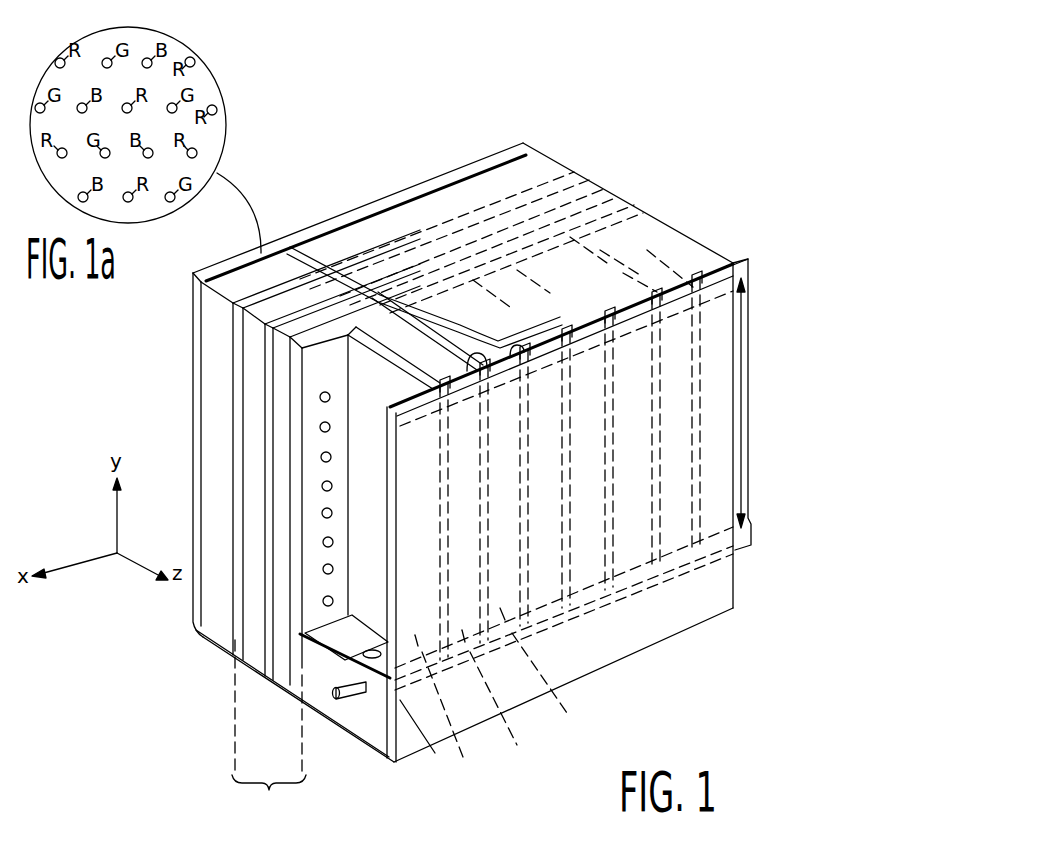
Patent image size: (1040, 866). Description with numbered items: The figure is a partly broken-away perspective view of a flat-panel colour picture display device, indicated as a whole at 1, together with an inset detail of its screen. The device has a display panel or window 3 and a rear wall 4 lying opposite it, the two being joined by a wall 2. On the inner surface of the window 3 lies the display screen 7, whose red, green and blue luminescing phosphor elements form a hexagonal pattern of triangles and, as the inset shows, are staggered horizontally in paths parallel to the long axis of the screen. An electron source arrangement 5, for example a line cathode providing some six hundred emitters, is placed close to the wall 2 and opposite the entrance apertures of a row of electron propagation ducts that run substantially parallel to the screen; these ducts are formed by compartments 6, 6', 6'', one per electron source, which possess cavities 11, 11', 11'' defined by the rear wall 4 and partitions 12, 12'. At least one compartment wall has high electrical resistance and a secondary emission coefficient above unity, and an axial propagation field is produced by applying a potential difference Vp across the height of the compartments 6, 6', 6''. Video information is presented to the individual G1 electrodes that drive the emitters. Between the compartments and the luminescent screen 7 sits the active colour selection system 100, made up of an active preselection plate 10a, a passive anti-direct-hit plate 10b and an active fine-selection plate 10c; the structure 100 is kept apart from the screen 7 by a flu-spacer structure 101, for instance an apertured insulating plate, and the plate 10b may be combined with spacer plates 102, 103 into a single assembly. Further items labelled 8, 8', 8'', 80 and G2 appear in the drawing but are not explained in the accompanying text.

The display housing 1 is at (746, 604).
The wall 2 is at (278, 683).
The display panel 3 is at (215, 262).
The rear wall 4 is at (680, 520).
The electron source arrangement 5 is at (348, 704).
The compartment 6 is at (446, 705).
The compartment 6' is at (498, 692).
The compartment 6'' is at (546, 663).
The display screen 7 is at (200, 331).
The hole 8 is at (346, 400).
The hole 8' is at (348, 432).
The hole 8'' is at (351, 529).
The preselection plate 10a is at (628, 200).
The anti-direct-hit plate 10b is at (610, 197).
The fine-selection plate 10c is at (578, 175).
The cavity 11 is at (227, 678).
The cavity 11' is at (424, 261).
The cavity 11'' is at (422, 228).
The partition 12 is at (415, 340).
The partition 12' is at (495, 381).
The opening 80 is at (298, 690).
The active colour selection system 100 is at (269, 725).
The flu-spacer structure 101 is at (222, 388).
The spacer plate 102 is at (256, 597).
The spacer plate 103 is at (285, 628).
The G1 electrode G1 is at (371, 695).
The gap G2 is at (422, 741).
The potential difference Vp is at (742, 406).